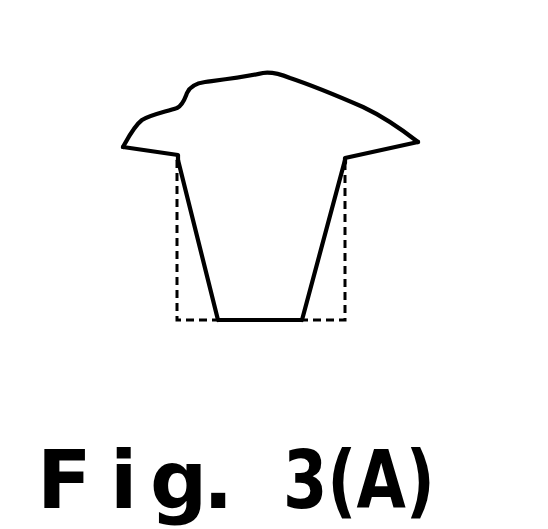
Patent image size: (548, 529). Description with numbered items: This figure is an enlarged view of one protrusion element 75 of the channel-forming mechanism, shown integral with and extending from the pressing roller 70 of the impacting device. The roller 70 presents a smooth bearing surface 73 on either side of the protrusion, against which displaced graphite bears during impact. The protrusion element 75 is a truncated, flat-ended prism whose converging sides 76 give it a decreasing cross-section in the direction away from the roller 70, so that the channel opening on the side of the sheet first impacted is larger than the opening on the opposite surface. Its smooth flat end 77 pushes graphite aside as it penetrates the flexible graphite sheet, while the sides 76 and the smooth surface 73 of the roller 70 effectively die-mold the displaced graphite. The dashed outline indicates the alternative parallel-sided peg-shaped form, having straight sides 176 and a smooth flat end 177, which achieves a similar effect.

The pressing roller 70 is at (295, 95).
The smooth bearing surface 73 is at (147, 157).
The protrusion element 75 is at (305, 226).
The converging side 76 is at (200, 250).
The smooth flat end 77 is at (262, 322).
The original side wall (phantom) 176 is at (347, 295).
The smooth flat end 177 is at (198, 322).